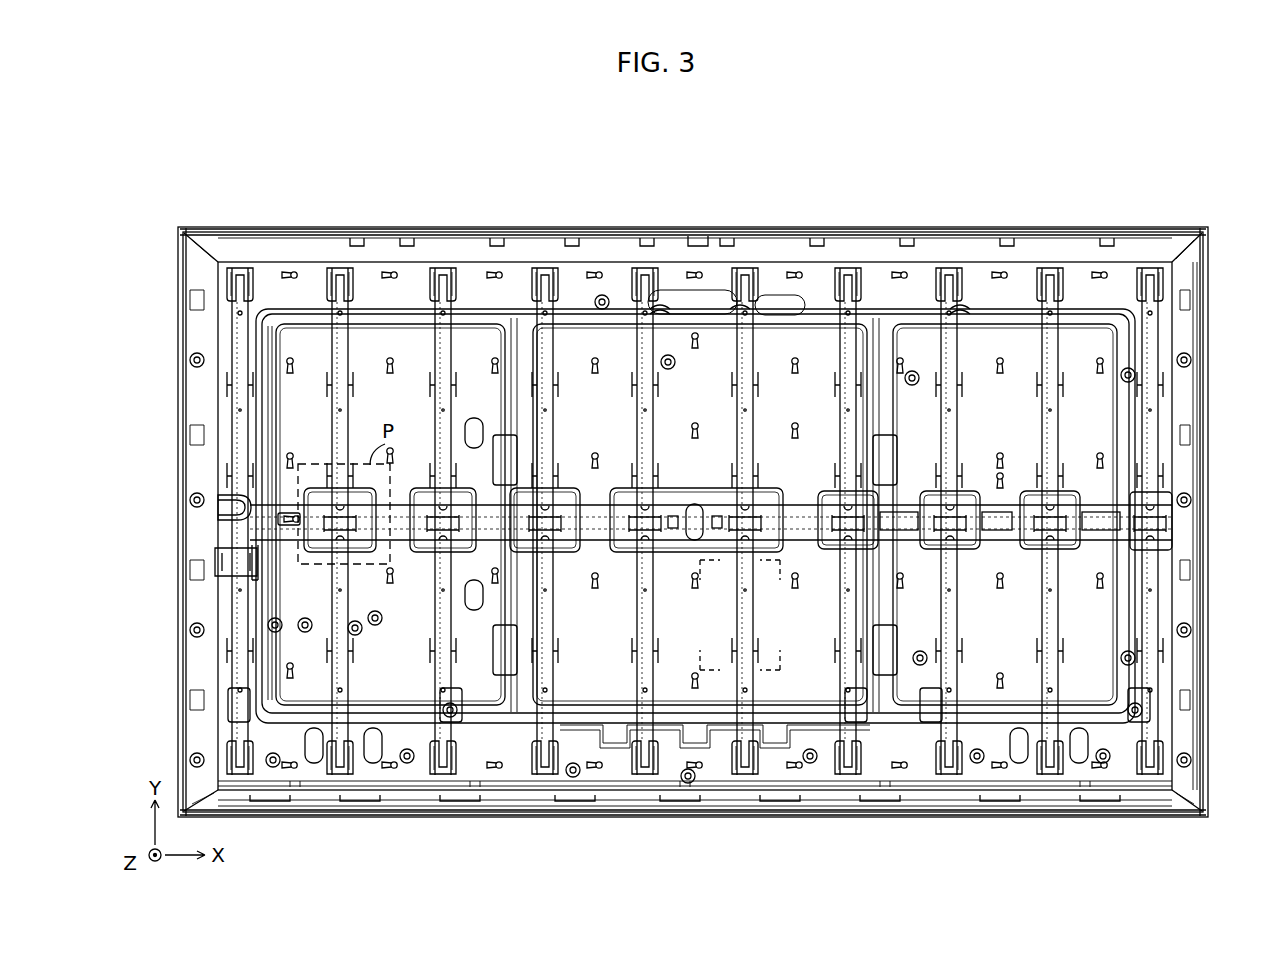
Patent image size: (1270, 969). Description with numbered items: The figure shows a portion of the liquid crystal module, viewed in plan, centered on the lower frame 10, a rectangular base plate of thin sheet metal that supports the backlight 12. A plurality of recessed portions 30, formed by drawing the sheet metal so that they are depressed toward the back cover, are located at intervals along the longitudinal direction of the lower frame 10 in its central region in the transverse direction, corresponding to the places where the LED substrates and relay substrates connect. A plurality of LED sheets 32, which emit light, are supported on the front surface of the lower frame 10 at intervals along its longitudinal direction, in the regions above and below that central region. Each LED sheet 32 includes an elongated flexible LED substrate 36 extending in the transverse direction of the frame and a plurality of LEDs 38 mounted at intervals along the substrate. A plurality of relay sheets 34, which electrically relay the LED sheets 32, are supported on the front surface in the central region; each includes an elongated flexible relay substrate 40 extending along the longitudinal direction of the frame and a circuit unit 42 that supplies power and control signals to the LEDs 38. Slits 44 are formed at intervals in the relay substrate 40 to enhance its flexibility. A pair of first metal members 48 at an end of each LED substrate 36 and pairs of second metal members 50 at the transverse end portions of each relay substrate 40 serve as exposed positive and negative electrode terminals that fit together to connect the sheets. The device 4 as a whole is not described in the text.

The display device 4 is at (1168, 198).
The lower frame 10 is at (1190, 232).
The backlight 12 is at (1182, 330).
The recessed portions 30 is at (360, 545).
The LED sheets 32 is at (545, 275).
The relay sheets 34 is at (268, 522).
The LED substrate 36 is at (238, 340).
The LEDs 38 is at (238, 285).
The relay substrate 40 is at (300, 530).
The circuit unit 42 is at (300, 540).
The slits 44 is at (340, 535).
The first metal members 48 is at (248, 505).
The second metal members 50 is at (258, 521).